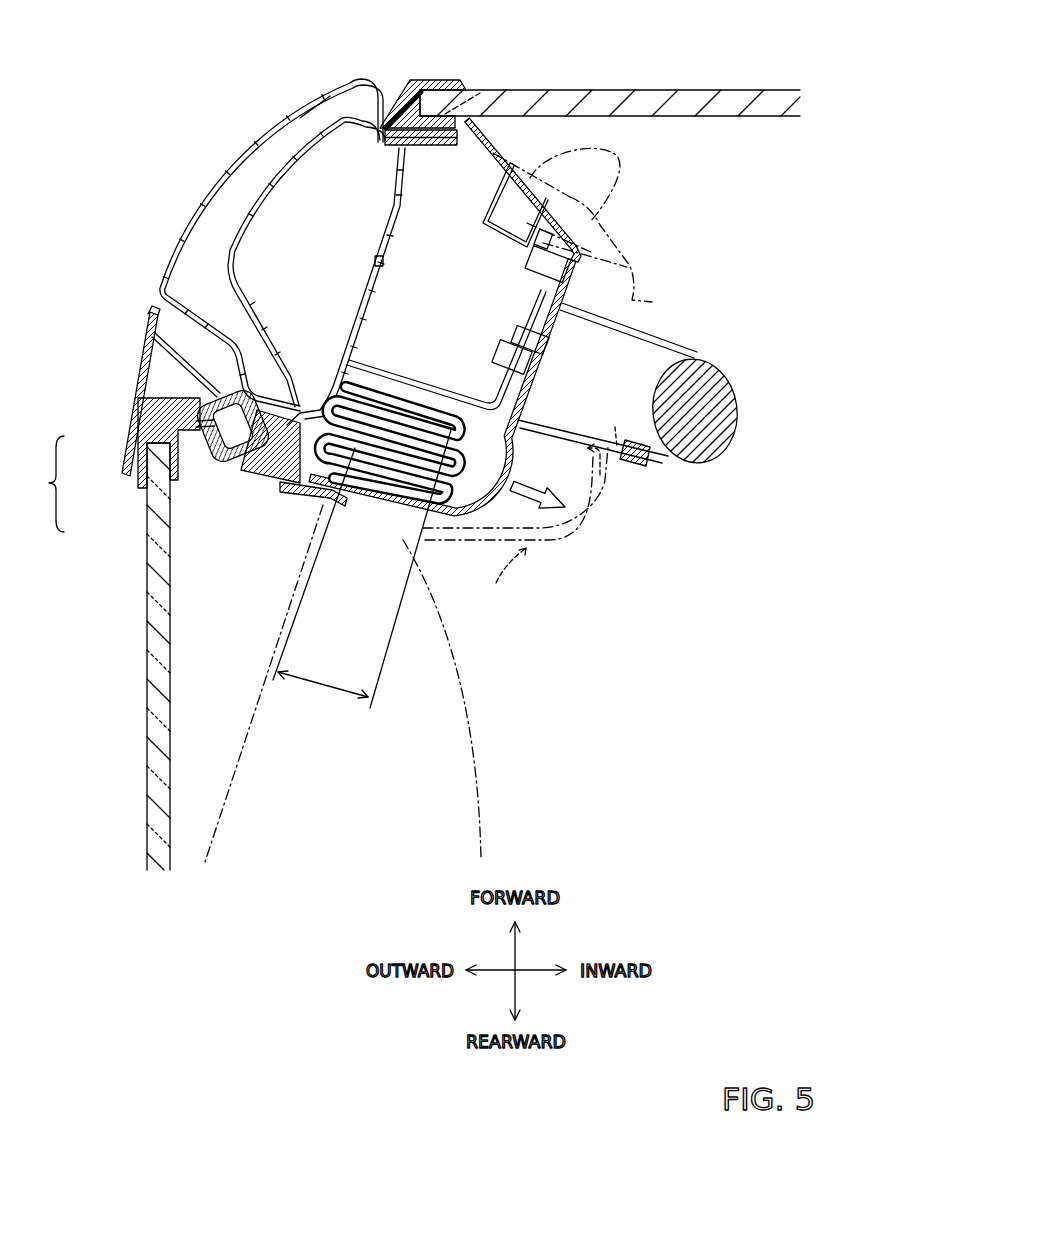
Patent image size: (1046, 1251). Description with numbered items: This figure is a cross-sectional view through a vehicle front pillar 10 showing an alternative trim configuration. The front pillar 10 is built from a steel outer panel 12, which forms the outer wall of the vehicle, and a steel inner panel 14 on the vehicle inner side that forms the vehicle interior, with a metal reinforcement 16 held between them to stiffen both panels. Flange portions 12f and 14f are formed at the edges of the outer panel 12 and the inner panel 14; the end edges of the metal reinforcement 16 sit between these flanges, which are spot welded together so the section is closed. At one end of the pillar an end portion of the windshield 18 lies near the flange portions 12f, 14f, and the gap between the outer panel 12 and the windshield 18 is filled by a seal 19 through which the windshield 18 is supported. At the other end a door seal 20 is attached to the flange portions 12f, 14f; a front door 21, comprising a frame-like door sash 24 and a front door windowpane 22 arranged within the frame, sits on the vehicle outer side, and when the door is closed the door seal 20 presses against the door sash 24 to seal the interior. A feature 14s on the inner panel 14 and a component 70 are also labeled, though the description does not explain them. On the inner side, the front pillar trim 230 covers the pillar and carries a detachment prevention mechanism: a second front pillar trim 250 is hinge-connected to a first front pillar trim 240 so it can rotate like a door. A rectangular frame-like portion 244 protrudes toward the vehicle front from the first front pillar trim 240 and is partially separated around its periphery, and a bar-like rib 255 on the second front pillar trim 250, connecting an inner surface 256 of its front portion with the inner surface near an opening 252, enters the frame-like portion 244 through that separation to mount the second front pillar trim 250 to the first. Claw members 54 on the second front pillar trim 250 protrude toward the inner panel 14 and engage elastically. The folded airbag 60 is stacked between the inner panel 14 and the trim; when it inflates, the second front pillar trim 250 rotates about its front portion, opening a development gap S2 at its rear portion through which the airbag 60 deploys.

The front pillar 10 is at (222, 158).
The outer panel 12 is at (272, 110).
The flange portion 12f is at (432, 92).
The inner panel 14 is at (382, 242).
The flange portion 14f is at (432, 145).
The stopper of bracket 14s is at (380, 267).
The metal reinforcement 16 is at (258, 198).
The windshield 18 is at (598, 90).
The seal 19 is at (405, 80).
The door seal 20 is at (265, 482).
The front door 21 is at (43, 484).
The front door windowpane 22 is at (160, 546).
The door sash 24 is at (126, 433).
The claw members 54 is at (507, 494).
The airbag 60 is at (397, 443).
The cylinder 70 is at (742, 441).
The front pillar trim 230 is at (385, 671).
The first front pillar trim 240 is at (550, 344).
The frame-like portion 244 is at (537, 257).
The second front pillar trim 250 is at (484, 516).
The opening 252 is at (635, 304).
The rib 255 is at (580, 250).
The inner surface 256 is at (527, 180).
The development gap S2 is at (362, 577).